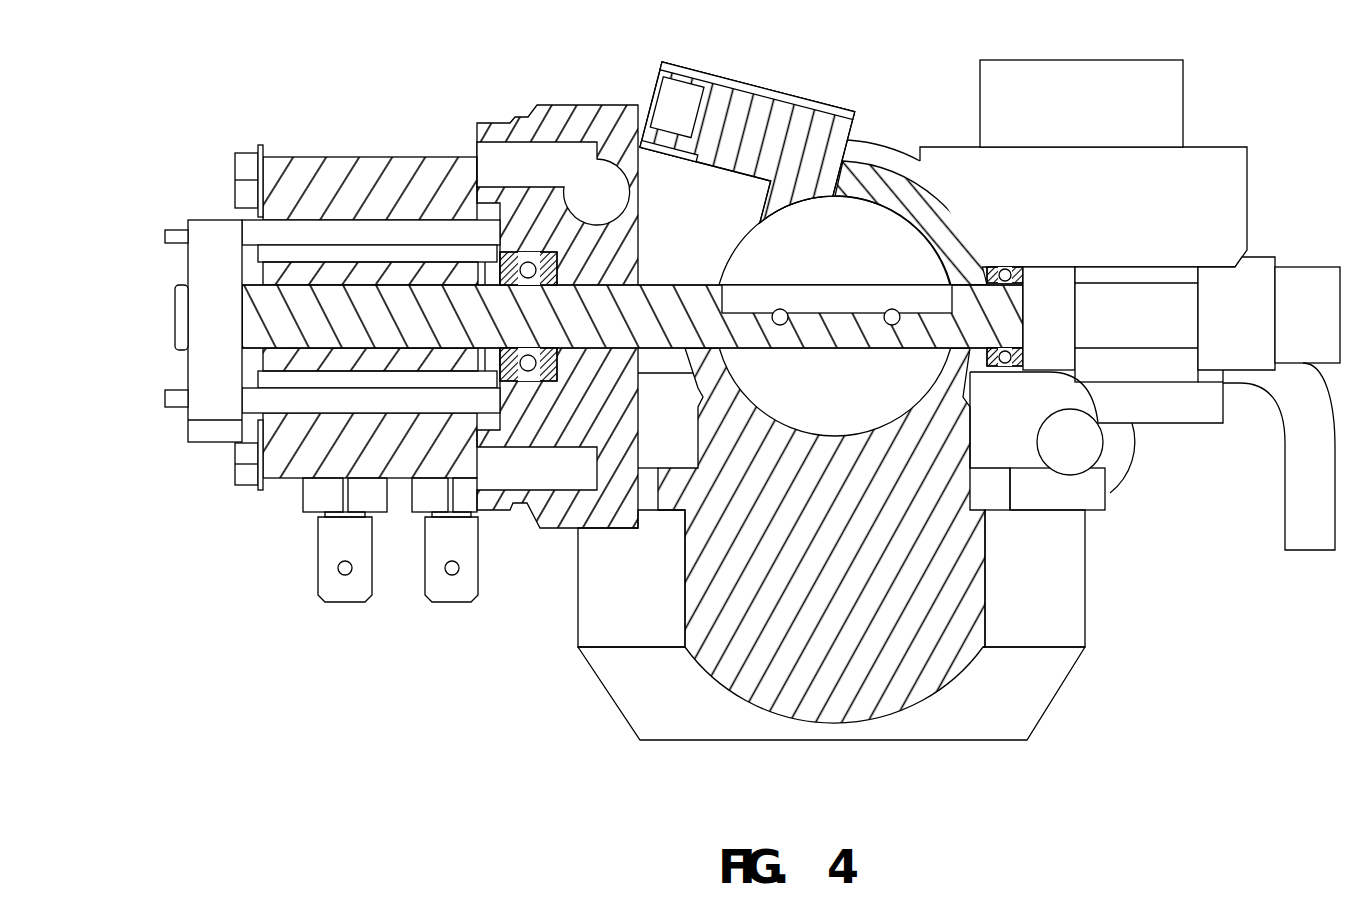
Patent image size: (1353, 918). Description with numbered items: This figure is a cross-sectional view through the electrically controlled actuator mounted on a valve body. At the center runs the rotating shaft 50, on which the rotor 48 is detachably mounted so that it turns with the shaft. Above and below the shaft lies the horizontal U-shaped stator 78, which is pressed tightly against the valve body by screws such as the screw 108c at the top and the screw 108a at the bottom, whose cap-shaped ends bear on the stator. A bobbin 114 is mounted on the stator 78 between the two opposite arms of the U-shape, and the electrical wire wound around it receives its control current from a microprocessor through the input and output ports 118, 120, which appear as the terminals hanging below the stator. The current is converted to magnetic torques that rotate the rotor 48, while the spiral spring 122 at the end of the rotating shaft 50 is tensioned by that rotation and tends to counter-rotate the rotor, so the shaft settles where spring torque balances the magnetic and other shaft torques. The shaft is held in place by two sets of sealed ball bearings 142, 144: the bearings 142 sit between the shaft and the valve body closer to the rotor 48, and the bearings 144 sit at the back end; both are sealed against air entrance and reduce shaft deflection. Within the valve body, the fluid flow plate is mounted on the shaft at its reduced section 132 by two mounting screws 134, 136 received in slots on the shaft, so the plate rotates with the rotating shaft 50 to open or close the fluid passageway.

The stator 78 is at (437, 154).
The rotor 48 is at (330, 268).
The rotating shaft 50 is at (265, 316).
The screw 108c is at (235, 163).
The screw 108a is at (248, 466).
The bobbin 114 is at (178, 222).
The spiral spring 122 is at (205, 357).
The output port 120 is at (330, 583).
The input port 118 is at (437, 583).
The sealed ball bearings 142 is at (555, 262).
The sealed ball bearings 144 is at (1023, 266).
The reduced section 132 is at (858, 298).
The mounting screw 134 is at (781, 308).
The mounting screw 136 is at (890, 328).